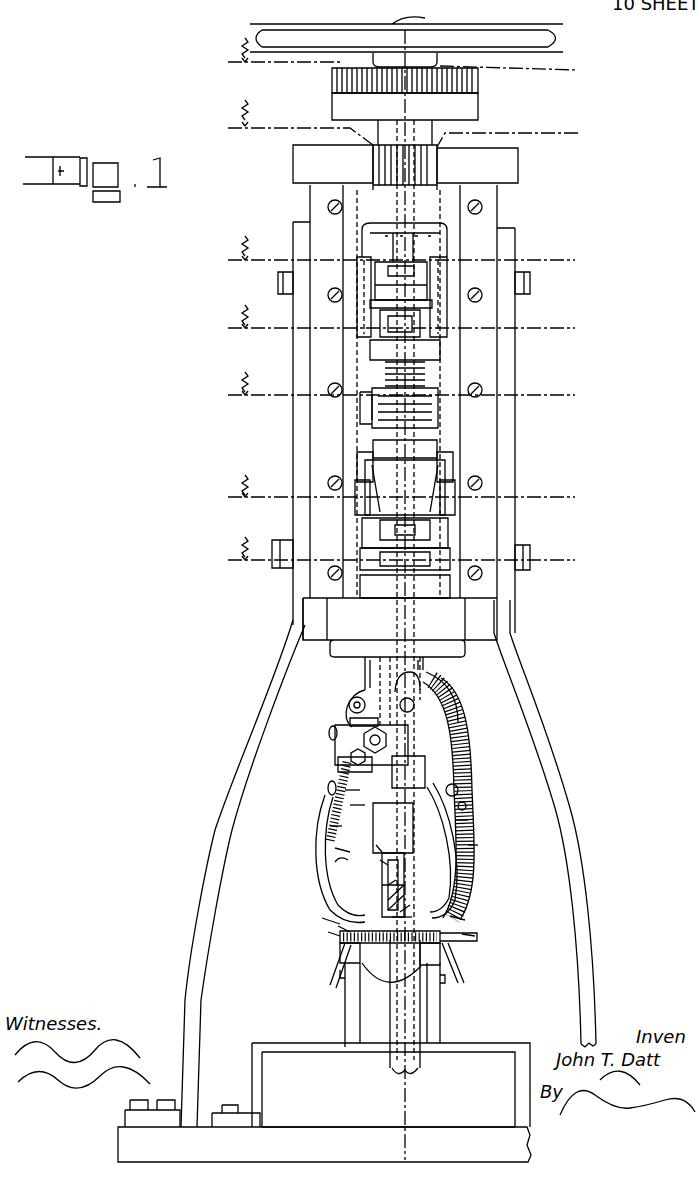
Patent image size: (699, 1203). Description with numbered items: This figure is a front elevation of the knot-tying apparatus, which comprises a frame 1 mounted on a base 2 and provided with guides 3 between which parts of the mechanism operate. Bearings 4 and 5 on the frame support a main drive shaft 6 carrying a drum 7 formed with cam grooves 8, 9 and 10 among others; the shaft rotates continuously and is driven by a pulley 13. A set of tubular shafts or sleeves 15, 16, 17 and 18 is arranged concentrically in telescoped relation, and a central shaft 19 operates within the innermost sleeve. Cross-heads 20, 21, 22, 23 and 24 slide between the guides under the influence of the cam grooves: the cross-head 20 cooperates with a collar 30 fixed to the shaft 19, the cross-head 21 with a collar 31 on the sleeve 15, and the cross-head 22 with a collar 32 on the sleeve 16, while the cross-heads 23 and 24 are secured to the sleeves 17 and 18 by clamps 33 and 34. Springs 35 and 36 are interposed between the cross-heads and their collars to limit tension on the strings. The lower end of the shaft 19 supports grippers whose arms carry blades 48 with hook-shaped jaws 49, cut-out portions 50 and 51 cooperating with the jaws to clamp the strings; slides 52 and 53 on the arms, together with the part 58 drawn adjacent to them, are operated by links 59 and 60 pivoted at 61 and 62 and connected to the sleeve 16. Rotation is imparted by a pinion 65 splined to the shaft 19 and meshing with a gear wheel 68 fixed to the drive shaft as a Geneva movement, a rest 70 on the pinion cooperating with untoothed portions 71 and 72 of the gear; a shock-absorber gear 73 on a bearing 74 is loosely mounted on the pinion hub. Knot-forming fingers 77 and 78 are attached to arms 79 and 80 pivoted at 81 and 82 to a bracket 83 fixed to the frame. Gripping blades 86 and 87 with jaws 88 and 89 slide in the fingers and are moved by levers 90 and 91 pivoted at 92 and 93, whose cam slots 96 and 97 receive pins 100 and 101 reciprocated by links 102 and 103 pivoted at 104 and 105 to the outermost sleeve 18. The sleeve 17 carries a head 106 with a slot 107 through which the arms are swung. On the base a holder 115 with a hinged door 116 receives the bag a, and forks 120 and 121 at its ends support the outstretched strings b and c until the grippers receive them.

The frame 1 is at (300, 232).
The base 2 is at (312, 1125).
The guides 3 is at (276, 452).
The bearing 4 is at (399, 58).
The bearing 5 is at (399, 123).
The main drive shaft 6 is at (420, 22).
The drum 7 is at (397, 328).
The cam groove 8 is at (396, 394).
The cam groove 9 is at (396, 499).
The cam groove 10 is at (398, 560).
The pulley 13 is at (552, 43).
The tubular shaft 15 is at (392, 328).
The tubular shaft 16 is at (393, 497).
The tubular shaft 17 is at (400, 557).
The tubular shaft 18 is at (365, 688).
The central shaft 19 is at (412, 250).
The cross-head 20 is at (415, 297).
The cross-head 21 is at (440, 288).
The cross-head 22 is at (358, 262).
The cross-head 23 is at (436, 500).
The cross-head 24 is at (358, 482).
The collar 30 is at (393, 283).
The collar 31 is at (395, 372).
The collar 32 is at (372, 410).
The clamp 33 is at (332, 520).
The clamp 34 is at (262, 614).
The spring 35 is at (432, 372).
The spring 36 is at (440, 468).
The gripper blade 48 is at (404, 903).
The hook-shaped jaw 49 is at (404, 917).
The cut-out portion 50 is at (388, 886).
The cut-out portion 51 is at (408, 910).
The slide 52 is at (340, 930).
The slide 53 is at (404, 870).
The head 58 is at (380, 822).
The link 59 is at (335, 862).
The link 60 is at (410, 838).
The pivot 61 is at (378, 848).
The pivot 62 is at (382, 862).
The pinion 65 is at (418, 165).
The gear wheel 68 is at (306, 167).
The rest 70 is at (440, 155).
The untoothed portion 71 is at (497, 163).
The untoothed portion 72 is at (325, 160).
The gear 73 is at (478, 84).
The bearing 74 is at (478, 107).
The knot-forming finger 77 is at (318, 892).
The knot-forming finger 78 is at (474, 900).
The arm 79 is at (338, 850).
The arm 80 is at (475, 845).
The pivot 81 is at (358, 738).
The pivot 82 is at (345, 750).
The bracket 83 is at (398, 684).
The gripping blade 86 is at (325, 920).
The gripping blade 87 is at (455, 918).
The jaw 88 is at (330, 932).
The jaw 89 is at (468, 936).
The lever 90 is at (350, 812).
The lever 91 is at (466, 806).
The pivot 92 is at (335, 830).
The pivot 93 is at (462, 822).
The cam slot 96 is at (330, 793).
The cam slot 97 is at (435, 770).
The pin 100 is at (345, 795).
The pin 101 is at (458, 788).
The link 102 is at (372, 722).
The link 103 is at (448, 720).
The pivot 104 is at (350, 703).
The pivot 105 is at (437, 708).
The head 106 is at (352, 762).
The slot 107 is at (352, 777).
The holder 115 is at (438, 1010).
The hinged door 116 is at (352, 1005).
The fork 120 is at (340, 935).
The fork 121 is at (442, 948).
The bag a is at (365, 975).
The string b is at (330, 960).
The string c is at (460, 968).